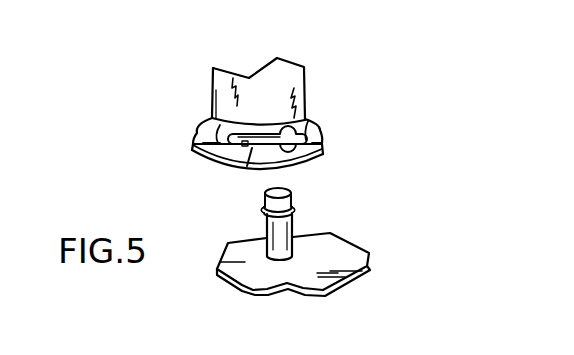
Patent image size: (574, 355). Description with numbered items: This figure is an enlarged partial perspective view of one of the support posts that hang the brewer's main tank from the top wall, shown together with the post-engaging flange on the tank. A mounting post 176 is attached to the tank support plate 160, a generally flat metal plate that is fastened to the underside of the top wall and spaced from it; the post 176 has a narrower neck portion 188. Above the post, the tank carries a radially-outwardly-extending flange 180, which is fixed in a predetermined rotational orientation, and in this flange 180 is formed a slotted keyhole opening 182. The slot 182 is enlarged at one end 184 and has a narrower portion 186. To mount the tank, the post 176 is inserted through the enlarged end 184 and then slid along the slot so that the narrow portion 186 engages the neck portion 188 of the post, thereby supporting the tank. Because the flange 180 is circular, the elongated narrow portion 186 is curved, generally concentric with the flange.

The tank support plate 160 is at (335, 257).
The mounting post 176 is at (293, 197).
The radially-outwardly-extending flange 180 is at (205, 132).
The slotted keyhole opening 182 is at (283, 145).
The enlarged end 184 is at (310, 143).
The narrow portion 186 is at (247, 166).
The neck portion 188 is at (267, 231).